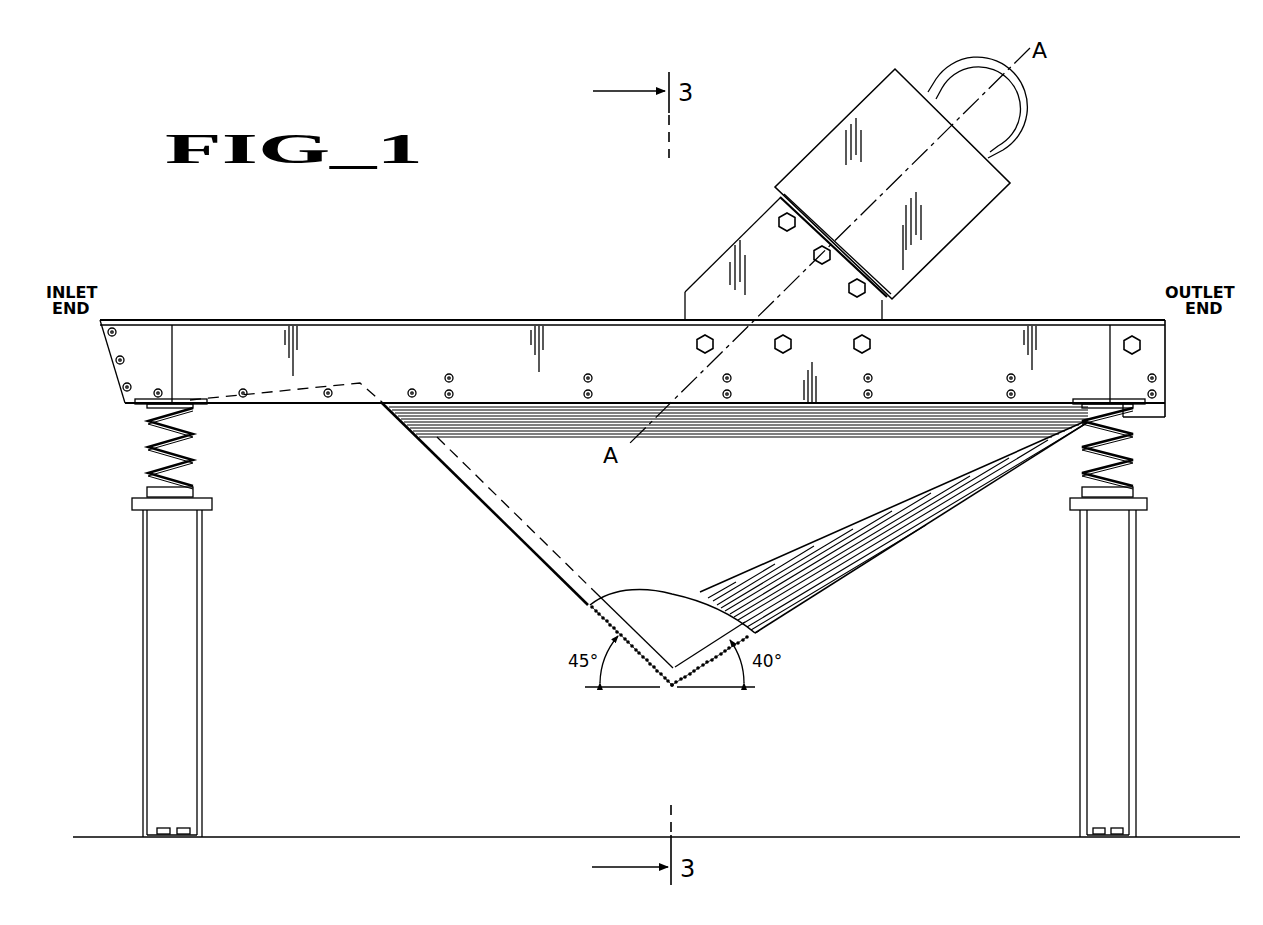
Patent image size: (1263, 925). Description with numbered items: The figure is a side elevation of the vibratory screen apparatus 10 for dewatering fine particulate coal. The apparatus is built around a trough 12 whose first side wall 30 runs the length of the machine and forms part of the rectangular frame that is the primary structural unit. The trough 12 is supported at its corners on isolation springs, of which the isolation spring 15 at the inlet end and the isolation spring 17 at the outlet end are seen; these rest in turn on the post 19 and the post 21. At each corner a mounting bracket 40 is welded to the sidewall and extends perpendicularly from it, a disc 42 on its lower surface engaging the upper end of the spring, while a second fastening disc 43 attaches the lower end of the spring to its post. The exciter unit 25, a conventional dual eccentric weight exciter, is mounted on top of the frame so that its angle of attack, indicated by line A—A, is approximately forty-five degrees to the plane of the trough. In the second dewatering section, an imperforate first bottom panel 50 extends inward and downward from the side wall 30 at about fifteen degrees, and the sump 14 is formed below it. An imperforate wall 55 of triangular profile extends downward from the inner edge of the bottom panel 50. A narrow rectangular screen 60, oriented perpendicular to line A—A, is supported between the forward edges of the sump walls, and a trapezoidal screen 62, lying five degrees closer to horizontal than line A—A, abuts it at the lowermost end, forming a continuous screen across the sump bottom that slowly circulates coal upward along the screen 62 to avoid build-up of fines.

The vibratory screen apparatus 10 is at (593, 210).
The trough 12 is at (560, 320).
The sump 14 is at (647, 616).
The isolation spring 15 is at (148, 440).
The isolation spring 17 is at (1125, 470).
The post 19 is at (143, 585).
The post 21 is at (1136, 628).
The exciter unit 25 is at (898, 131).
The first side wall 30 is at (292, 330).
The mounting bracket 40 is at (178, 398).
The disc 42 is at (192, 412).
The second fastening disc 43 is at (193, 487).
The first bottom panel 50 is at (396, 418).
The imperforate wall 55 is at (505, 489).
The narrow rectangular screen 60 is at (595, 612).
The trapezoidal screen 62 is at (752, 637).